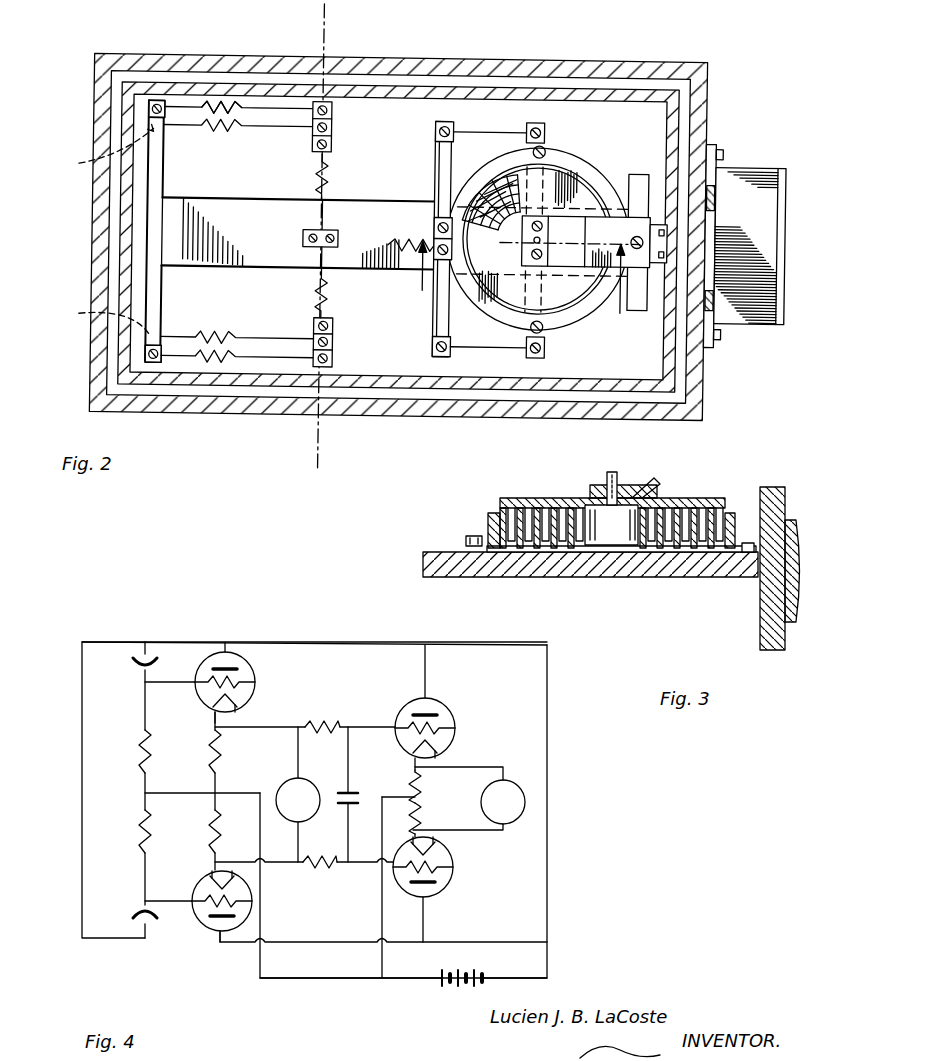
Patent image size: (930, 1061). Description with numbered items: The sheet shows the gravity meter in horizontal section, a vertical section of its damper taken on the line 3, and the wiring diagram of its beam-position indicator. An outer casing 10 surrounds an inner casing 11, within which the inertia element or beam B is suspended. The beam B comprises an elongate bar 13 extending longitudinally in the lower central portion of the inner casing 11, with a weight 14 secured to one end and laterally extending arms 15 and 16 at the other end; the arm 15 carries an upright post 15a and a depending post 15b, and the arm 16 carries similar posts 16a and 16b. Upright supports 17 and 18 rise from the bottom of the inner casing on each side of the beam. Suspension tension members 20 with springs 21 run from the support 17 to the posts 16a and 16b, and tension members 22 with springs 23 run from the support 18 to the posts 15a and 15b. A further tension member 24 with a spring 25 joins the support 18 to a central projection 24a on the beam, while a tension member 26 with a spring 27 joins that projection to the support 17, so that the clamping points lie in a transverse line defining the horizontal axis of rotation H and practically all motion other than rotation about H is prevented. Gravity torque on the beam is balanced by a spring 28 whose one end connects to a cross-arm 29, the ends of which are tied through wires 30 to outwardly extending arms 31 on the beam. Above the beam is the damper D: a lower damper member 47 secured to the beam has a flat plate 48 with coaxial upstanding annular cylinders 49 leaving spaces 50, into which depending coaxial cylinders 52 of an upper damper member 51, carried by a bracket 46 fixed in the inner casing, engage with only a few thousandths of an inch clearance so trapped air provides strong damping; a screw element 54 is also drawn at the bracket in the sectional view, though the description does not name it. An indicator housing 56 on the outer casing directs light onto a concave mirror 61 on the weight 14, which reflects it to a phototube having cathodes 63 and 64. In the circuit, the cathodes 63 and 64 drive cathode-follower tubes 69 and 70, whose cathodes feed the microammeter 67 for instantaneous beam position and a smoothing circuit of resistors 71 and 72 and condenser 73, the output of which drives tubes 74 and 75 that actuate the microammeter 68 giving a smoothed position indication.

In FIG. 2, the outer casing 10 is at (406, 58).
In FIG. 2, the inner casing 11 is at (462, 86).
In FIG. 2, the elongate bar 13 is at (350, 256).
In FIG. 3, the elongate bar 13 is at (442, 553).
In FIG. 2, the weight 14 is at (636, 171).
In FIG. 3, the weight 14 is at (772, 487).
In FIG. 2, the laterally extending arm 15 is at (163, 165).
In FIG. 2, the upright post 15a is at (160, 104).
In FIG. 2, the depending post 15b is at (102, 157).
In FIG. 2, the laterally extending arm 16 is at (163, 283).
In FIG. 2, the upright post 16a is at (147, 354).
In FIG. 2, the depending post 16b is at (99, 309).
In FIG. 2, the upright support 17 is at (335, 343).
In FIG. 2, the upright support 18 is at (332, 128).
In FIG. 2, the suspension tension member 20 is at (256, 335).
In FIG. 2, the spring 21 is at (225, 364).
In FIG. 2, the suspension tension member 22 is at (280, 108).
In FIG. 2, the spring 23 is at (237, 105).
In FIG. 2, the tension member 24 is at (321, 216).
In FIG. 2, the central projection 24a is at (303, 238).
In FIG. 2, the spring 25 is at (316, 176).
In FIG. 2, the tension member 26 is at (321, 259).
In FIG. 2, the spring 27 is at (316, 296).
In FIG. 2, the spring 28 is at (402, 238).
In FIG. 2, the cross-arm 29 is at (434, 150).
In FIG. 2, the wire 30 is at (506, 131).
In FIG. 2, the outwardly extending arm 31 is at (545, 131).
In FIG. 2, the bracket 46 is at (595, 242).
In FIG. 3, the bracket 46 is at (638, 485).
In FIG. 3, the lower damper member 47 is at (472, 538).
In FIG. 3, the flat plate 48 is at (525, 548).
In FIG. 3, the annular cylinder 49 is at (520, 507).
In FIG. 3, the space 50 is at (563, 547).
In FIG. 3, the upper damper member 51 is at (665, 498).
In FIG. 3, the depending coaxial cylinder 52 is at (702, 513).
In FIG. 2, the adjusting screw 54 is at (535, 238).
In FIG. 3, the adjusting screw 54 is at (612, 472).
In FIG. 2, the indicator housing 56 is at (760, 163).
In FIG. 3, the concave mirror 61 is at (798, 520).
In FIG. 4, the cathode 63 is at (160, 658).
In FIG. 4, the cathode 64 is at (158, 925).
In FIG. 4, the microammeter 67 is at (285, 782).
In FIG. 4, the microammeter 68 is at (510, 782).
In FIG. 4, the tube 69 is at (245, 683).
In FIG. 4, the tube 70 is at (205, 897).
In FIG. 4, the resistor 71 is at (320, 722).
In FIG. 4, the resistor 72 is at (325, 868).
In FIG. 4, the condenser 73 is at (360, 795).
In FIG. 4, the tube 74 is at (455, 716).
In FIG. 4, the tube 75 is at (452, 880).
In FIG. 2, the beam B is at (359, 201).
In FIG. 3, the beam B is at (627, 568).
In FIG. 2, the damper D is at (487, 189).
In FIG. 3, the damper D is at (582, 539).
In FIG. 2, the horizontal axis of rotation H is at (326, 440).
In FIG. 2, the section line 3— 3 is at (522, 291).